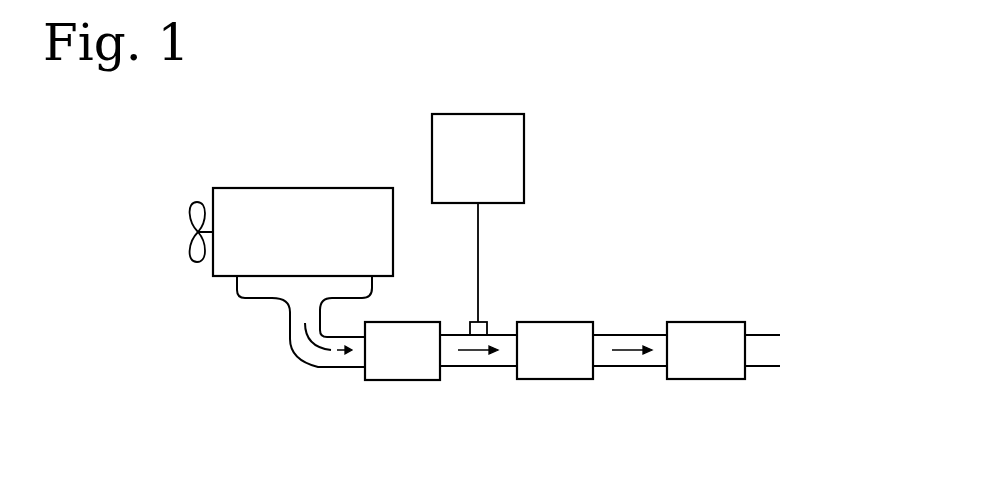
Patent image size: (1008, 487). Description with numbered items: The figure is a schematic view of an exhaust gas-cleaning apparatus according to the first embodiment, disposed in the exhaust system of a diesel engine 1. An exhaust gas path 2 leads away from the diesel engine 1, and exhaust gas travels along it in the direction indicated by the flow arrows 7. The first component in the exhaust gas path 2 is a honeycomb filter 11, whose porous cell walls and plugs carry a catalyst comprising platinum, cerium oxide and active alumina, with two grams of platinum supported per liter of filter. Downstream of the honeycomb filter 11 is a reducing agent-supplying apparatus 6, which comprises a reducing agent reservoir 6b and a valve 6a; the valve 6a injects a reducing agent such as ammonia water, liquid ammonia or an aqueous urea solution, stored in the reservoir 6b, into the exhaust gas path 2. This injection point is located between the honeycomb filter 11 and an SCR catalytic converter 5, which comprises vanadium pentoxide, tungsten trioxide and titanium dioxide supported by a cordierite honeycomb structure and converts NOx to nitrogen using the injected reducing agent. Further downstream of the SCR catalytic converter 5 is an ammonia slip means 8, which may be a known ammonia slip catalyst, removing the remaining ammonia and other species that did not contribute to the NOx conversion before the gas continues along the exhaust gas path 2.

The diesel engine 1 is at (285, 191).
The exhaust gas path 2 is at (457, 332).
The SCR catalytic converter 5 is at (555, 376).
The reducing agent-supplying apparatus 6 is at (472, 224).
The valve 6a is at (484, 320).
The reducing agent reservoir 6b is at (432, 143).
The exhaust gas flow 7 is at (328, 352).
The ammonia slip means 8 is at (722, 376).
The honeycomb filter 11 is at (400, 376).